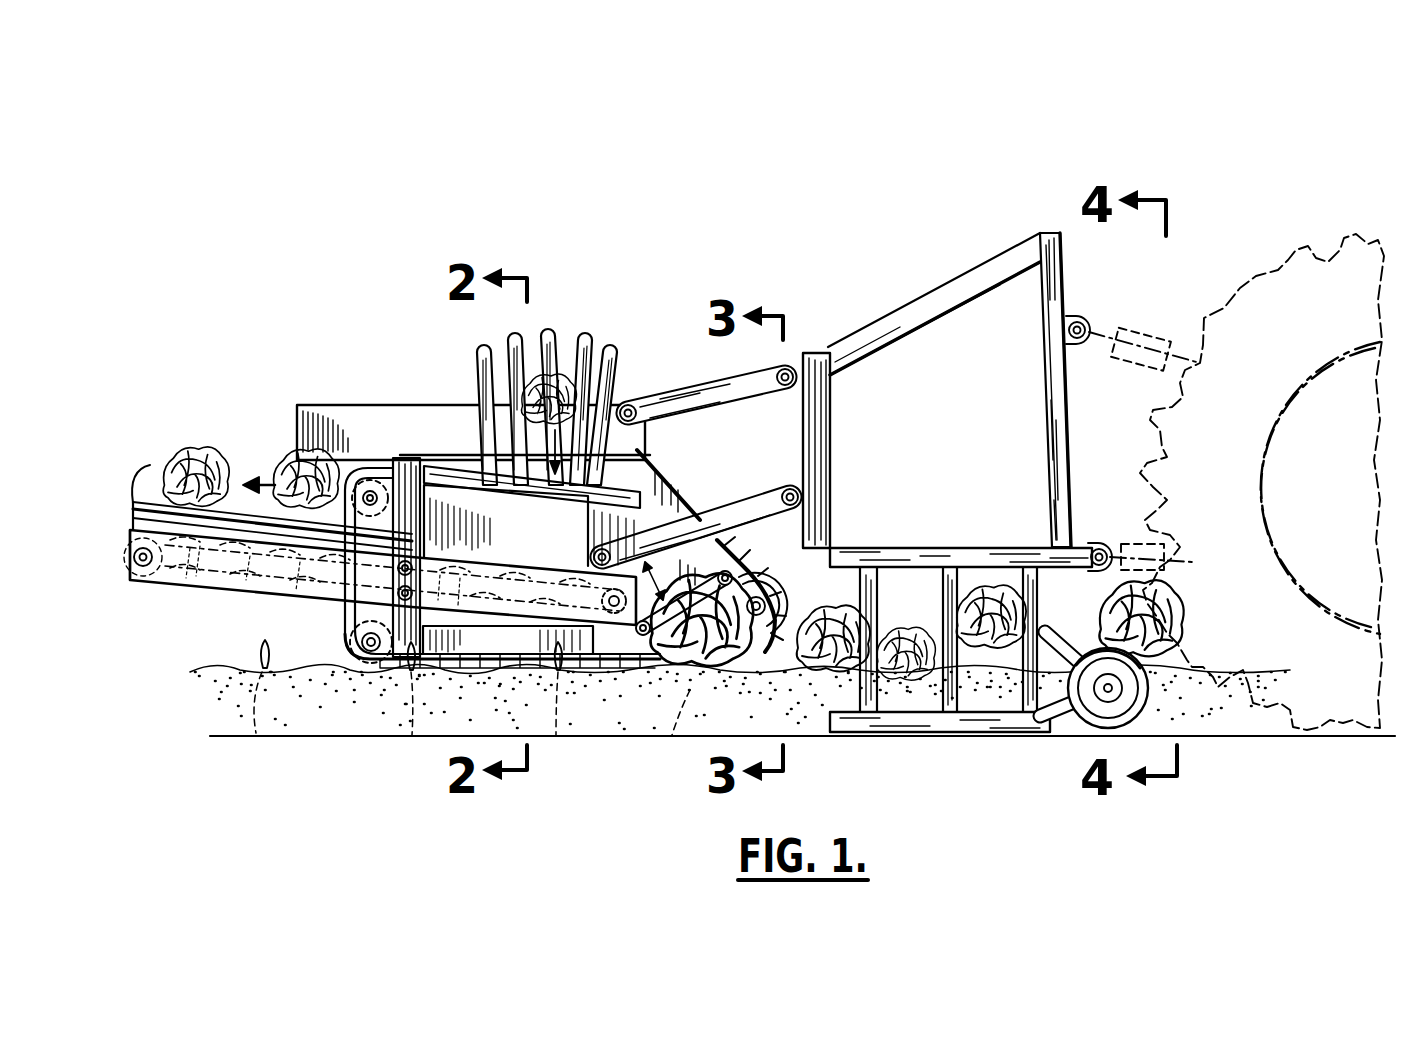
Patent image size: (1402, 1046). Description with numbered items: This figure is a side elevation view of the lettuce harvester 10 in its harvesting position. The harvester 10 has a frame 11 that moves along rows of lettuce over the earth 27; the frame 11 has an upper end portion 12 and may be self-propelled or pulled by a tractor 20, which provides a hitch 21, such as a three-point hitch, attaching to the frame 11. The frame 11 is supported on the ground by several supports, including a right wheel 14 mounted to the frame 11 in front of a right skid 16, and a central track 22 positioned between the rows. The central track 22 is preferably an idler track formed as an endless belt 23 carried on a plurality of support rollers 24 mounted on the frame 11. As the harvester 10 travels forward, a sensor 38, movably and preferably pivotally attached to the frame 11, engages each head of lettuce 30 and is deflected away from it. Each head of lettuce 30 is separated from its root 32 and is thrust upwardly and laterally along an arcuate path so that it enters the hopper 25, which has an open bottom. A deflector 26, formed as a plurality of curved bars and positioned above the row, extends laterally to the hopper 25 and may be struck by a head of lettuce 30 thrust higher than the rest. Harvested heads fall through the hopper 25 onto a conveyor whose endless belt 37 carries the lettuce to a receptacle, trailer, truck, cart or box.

The lettuce harvester 10 is at (1122, 165).
The frame 11 is at (425, 408).
The upper end portion 12 is at (705, 388).
The right wheel 14 is at (1100, 727).
The right skid 16 is at (868, 727).
The tractor 20 is at (1303, 245).
The hitch 21 is at (1168, 328).
The central track 22 is at (347, 618).
The endless belt 23 is at (758, 565).
The support rollers 24 is at (362, 480).
The hopper 25 is at (537, 539).
The deflector 26 is at (482, 350).
The earth 27 is at (225, 690).
The head of lettuce 30 is at (285, 482).
The root 32 is at (262, 655).
The endless belt 37 is at (143, 470).
The sensor 38 is at (212, 585).